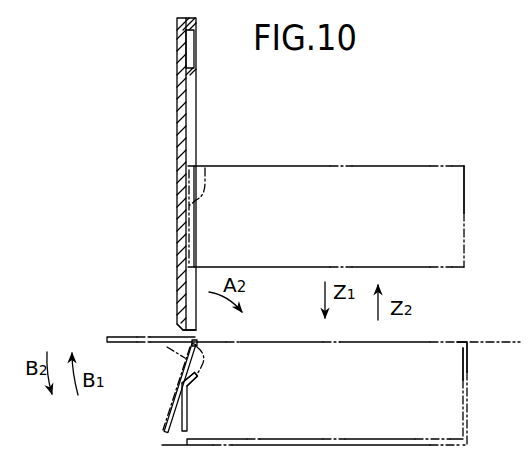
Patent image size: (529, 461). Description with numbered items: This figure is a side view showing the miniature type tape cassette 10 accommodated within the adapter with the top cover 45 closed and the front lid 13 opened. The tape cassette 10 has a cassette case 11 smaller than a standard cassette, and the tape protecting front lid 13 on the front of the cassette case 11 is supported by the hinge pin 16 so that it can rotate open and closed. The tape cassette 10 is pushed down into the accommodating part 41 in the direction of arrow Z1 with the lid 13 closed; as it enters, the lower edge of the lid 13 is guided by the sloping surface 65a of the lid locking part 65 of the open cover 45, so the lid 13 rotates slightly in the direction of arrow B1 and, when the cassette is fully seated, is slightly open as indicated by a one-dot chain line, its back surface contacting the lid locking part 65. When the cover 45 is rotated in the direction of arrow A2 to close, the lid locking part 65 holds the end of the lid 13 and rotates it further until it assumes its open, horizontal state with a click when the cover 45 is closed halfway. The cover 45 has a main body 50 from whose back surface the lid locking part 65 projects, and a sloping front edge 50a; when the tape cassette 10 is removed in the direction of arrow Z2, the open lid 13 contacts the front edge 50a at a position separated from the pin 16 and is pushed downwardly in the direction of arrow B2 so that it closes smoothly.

The miniature type tape cassette 10 is at (362, 165).
The cassette case 11 is at (464, 197).
The tape protecting front lid 13 is at (187, 212).
The hinge pin 16 is at (207, 358).
The accommodating part 41 is at (463, 360).
The cover 45 is at (176, 82).
The main body 50 is at (177, 126).
The front edge 50a is at (182, 332).
The lid locking part 65 is at (187, 412).
The sloping surface 65a is at (197, 376).